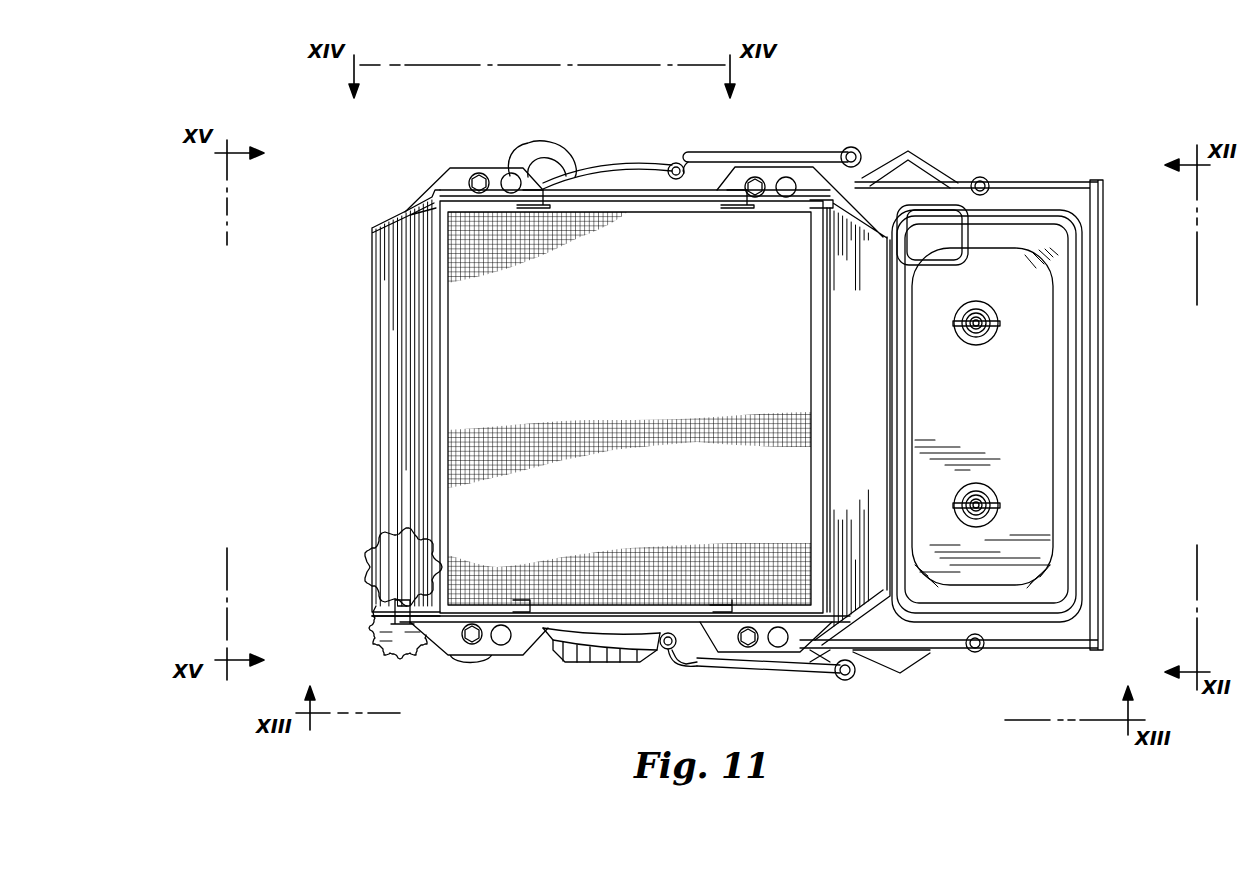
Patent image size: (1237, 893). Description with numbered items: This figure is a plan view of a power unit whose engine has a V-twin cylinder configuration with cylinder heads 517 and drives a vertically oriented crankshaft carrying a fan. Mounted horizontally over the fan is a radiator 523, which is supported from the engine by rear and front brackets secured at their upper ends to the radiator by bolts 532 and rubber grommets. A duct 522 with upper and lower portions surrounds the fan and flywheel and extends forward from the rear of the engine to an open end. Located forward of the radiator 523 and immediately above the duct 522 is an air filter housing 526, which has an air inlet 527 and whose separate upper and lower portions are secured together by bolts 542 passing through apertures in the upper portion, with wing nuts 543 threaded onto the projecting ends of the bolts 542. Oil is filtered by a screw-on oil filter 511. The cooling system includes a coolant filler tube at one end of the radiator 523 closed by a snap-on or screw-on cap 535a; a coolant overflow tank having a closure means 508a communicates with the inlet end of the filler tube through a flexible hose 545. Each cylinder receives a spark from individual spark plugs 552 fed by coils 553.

The radiator 523 is at (710, 339).
The duct 522 is at (1042, 180).
The air filter housing 526 is at (1002, 419).
The air inlet 527 is at (950, 208).
The bolts 542 is at (978, 320).
The wing nuts 543 is at (988, 330).
The bolts 532 is at (479, 182).
The spark plugs 552 is at (850, 152).
The coils 553 is at (678, 165).
The cylinder heads 517 is at (900, 165).
The oil filter 511 is at (618, 658).
The cap 535a is at (383, 568).
The flexible hose 545 is at (392, 605).
The closure means 508a is at (380, 632).